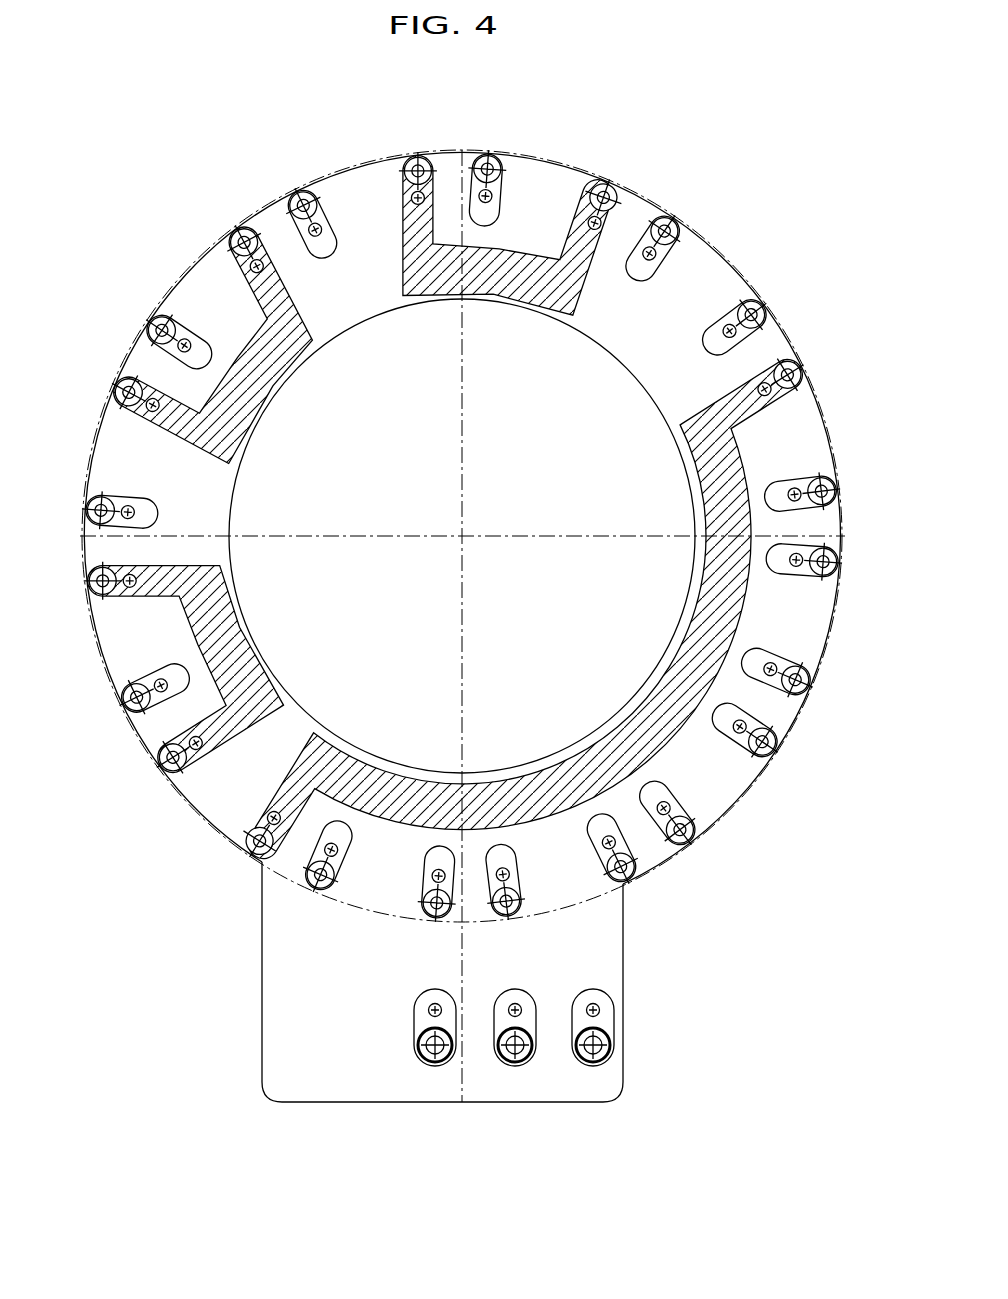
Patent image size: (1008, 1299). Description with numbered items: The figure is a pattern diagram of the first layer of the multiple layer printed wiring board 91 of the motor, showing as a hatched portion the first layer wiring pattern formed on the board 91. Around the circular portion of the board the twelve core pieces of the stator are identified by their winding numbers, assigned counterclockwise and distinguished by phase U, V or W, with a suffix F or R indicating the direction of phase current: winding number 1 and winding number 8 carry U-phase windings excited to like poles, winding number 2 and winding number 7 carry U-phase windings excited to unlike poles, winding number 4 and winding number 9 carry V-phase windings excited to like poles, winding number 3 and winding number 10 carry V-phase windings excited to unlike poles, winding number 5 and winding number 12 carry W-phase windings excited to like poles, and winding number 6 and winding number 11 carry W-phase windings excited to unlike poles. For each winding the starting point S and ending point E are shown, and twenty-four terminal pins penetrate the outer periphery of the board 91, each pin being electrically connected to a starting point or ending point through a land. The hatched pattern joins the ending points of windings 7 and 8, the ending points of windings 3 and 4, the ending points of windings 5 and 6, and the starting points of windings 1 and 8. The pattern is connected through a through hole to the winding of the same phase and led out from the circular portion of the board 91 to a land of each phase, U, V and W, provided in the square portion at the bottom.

The winding number one (winding U1F) 1 is at (815, 430).
The winding number two (winding U2R) 2 is at (703, 274).
The winding number three (winding V3R) 3 is at (545, 174).
The winding number four (winding V4F) 4 is at (357, 191).
The winding number five (winding W5F) 5 is at (199, 287).
The winding number six (winding W6R) 6 is at (101, 448).
The winding number seven (winding U7R) 7 is at (119, 646).
The winding number eight (winding U8F) 8 is at (210, 806).
The winding number nine (winding V9F) 9 is at (378, 886).
The winding number ten (winding V10R) 10 is at (563, 881).
The winding number eleven (winding W11R) 11 is at (718, 785).
The winding number twelve (winding W12F) 12 is at (821, 624).
The multiple layer printed wiring board (first layer) 91 is at (615, 1101).